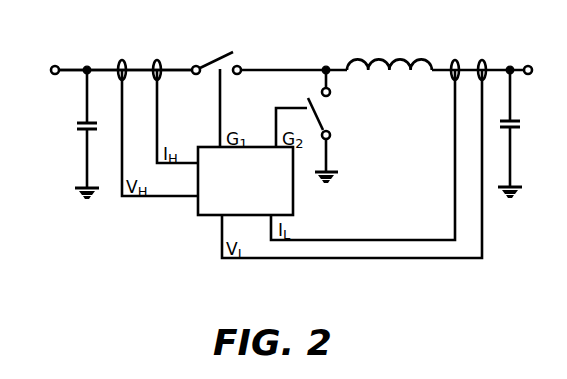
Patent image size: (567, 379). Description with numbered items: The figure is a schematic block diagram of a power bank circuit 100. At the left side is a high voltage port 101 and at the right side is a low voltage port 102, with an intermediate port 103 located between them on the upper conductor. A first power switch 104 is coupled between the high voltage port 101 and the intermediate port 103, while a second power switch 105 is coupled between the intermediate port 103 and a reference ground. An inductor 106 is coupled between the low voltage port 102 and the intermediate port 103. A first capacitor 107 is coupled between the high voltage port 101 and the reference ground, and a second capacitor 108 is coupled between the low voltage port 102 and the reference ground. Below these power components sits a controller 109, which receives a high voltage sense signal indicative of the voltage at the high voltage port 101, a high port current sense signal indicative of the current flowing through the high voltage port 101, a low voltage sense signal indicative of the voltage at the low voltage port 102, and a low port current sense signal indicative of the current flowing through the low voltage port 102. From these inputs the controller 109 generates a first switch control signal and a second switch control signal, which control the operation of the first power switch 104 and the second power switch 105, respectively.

The power bank circuit 100 is at (74, 37).
The high voltage port 101 is at (52, 75).
The low voltage port 102 is at (527, 65).
The intermediate port 103 is at (325, 67).
The first power switch 104 is at (217, 55).
The second power switch 105 is at (330, 112).
The inductor 106 is at (393, 57).
The first capacitor 107 is at (78, 133).
The second capacitor 108 is at (522, 133).
The controller 109 is at (245, 181).